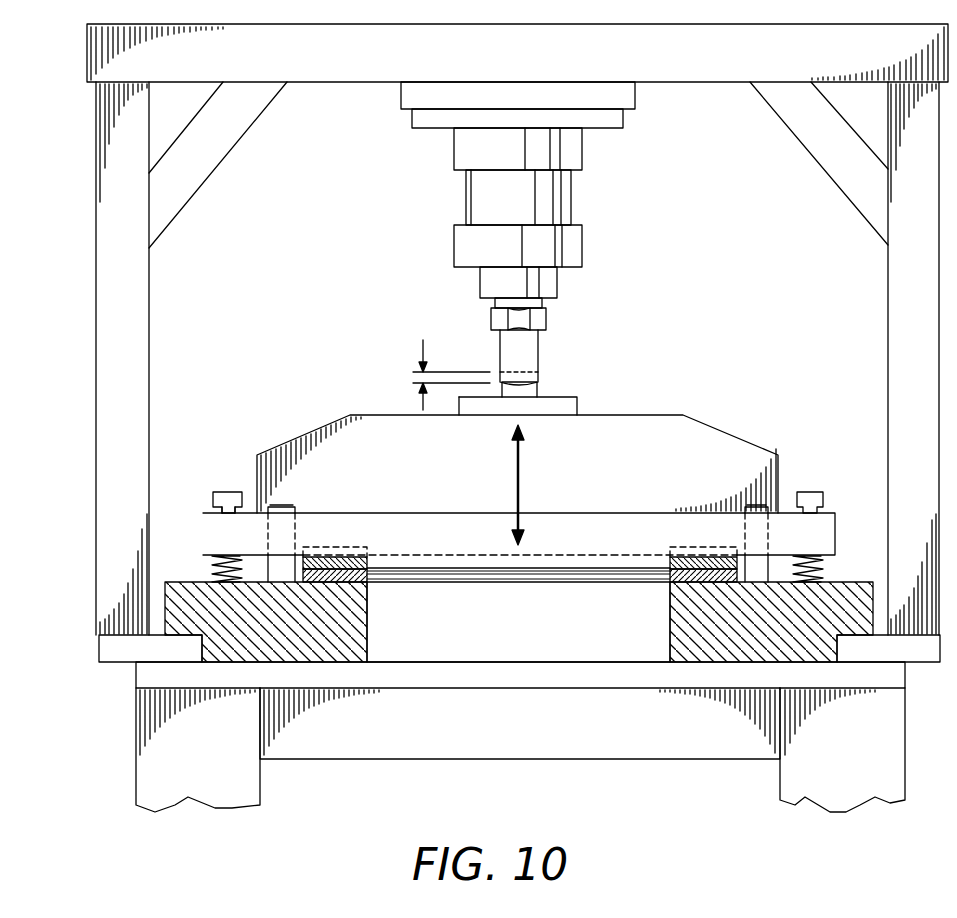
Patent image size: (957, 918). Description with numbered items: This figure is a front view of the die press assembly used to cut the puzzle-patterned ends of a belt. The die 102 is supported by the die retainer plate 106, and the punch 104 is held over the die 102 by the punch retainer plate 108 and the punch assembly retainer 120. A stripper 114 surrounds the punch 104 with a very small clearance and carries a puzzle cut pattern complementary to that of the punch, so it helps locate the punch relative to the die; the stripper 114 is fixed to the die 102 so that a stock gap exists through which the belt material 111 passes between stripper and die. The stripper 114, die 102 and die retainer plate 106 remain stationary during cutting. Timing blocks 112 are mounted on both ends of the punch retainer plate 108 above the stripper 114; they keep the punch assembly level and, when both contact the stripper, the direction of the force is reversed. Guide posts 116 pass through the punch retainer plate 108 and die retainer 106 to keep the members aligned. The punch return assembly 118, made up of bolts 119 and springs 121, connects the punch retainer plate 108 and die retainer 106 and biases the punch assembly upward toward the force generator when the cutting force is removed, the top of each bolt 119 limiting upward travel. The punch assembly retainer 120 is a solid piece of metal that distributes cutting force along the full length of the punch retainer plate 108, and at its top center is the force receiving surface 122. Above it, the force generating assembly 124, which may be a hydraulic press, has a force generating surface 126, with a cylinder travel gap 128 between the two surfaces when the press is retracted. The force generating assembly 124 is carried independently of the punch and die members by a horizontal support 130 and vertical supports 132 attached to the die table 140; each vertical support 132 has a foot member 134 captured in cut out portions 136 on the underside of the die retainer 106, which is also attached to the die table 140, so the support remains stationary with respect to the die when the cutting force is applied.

The die 102 is at (377, 582).
The punch 104 is at (468, 563).
The die retainer plate 106 is at (175, 579).
The punch retainer plate 108 is at (573, 530).
The belt material 111 is at (553, 572).
The timing blocks 112 is at (350, 556).
The stripper 114 is at (360, 566).
The guide posts 116 is at (283, 508).
The punch return assembly 118 is at (230, 492).
The punch return assembly bolt 119 is at (215, 510).
The punch assembly retainer 120 is at (692, 425).
The punch return assembly spring 121 is at (212, 573).
The force receiving surface 122 is at (508, 378).
The force generating assembly 124 is at (563, 203).
The force generating surface 126 is at (537, 392).
The cylinder travel gap 128 is at (441, 359).
The force generating assembly horizontal support 130 is at (343, 70).
The vertical supports 132 is at (97, 334).
The foot member 134 is at (99, 657).
The cut out portions 136 is at (170, 646).
The die table 140 is at (137, 677).